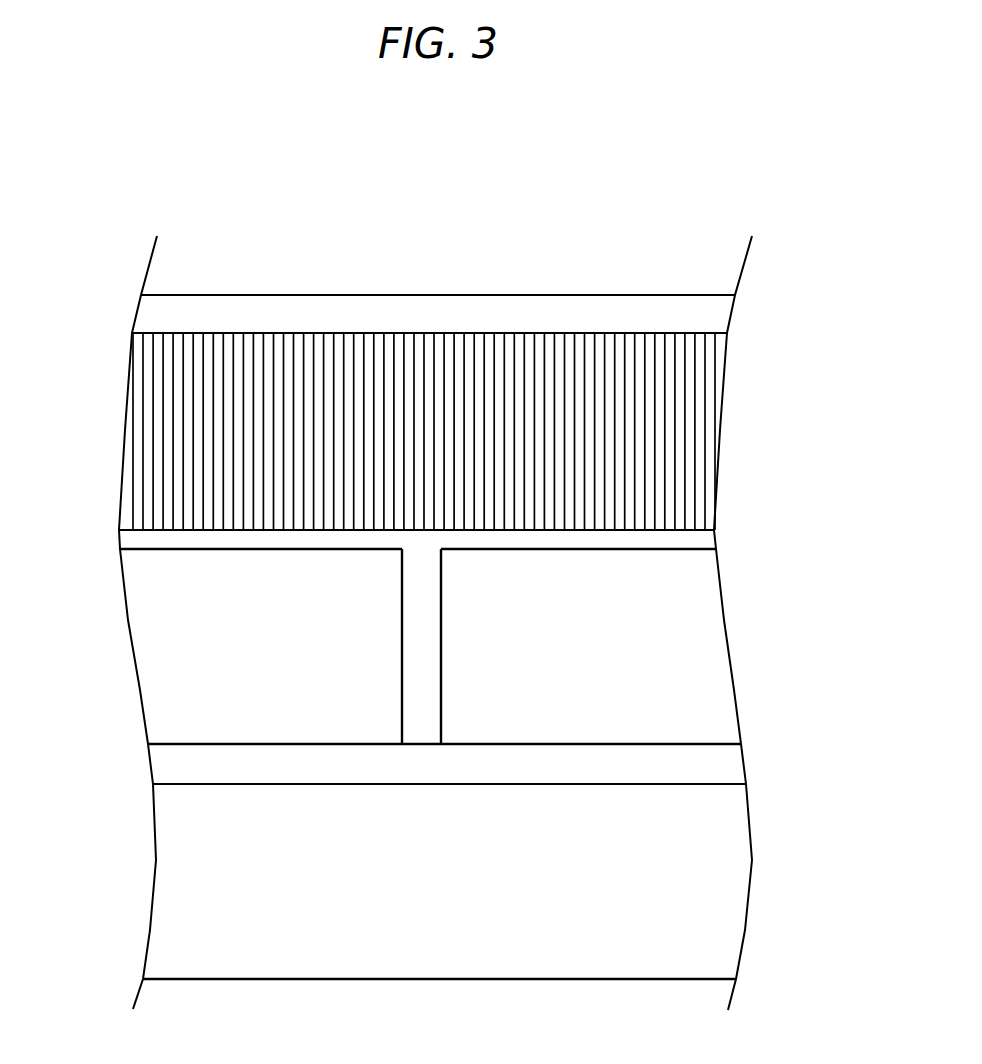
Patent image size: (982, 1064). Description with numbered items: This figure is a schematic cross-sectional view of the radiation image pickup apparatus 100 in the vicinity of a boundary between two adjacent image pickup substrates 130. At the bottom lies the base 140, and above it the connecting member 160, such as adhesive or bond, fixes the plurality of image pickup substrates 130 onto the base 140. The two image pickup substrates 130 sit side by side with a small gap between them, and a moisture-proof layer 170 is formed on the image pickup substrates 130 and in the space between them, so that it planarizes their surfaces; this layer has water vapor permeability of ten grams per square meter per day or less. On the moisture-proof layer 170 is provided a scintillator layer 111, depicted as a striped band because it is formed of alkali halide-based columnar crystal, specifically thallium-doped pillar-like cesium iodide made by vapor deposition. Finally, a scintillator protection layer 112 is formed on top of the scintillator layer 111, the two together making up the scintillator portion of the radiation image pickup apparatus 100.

The radiation image pickup apparatus 100 is at (698, 173).
The scintillator layer 111 is at (455, 350).
The scintillator protection layer 112 is at (607, 295).
The moisture-proof layer 170 is at (688, 542).
The image pickup substrate 130 is at (185, 663).
The connecting member 160 is at (697, 767).
The base 140 is at (697, 893).